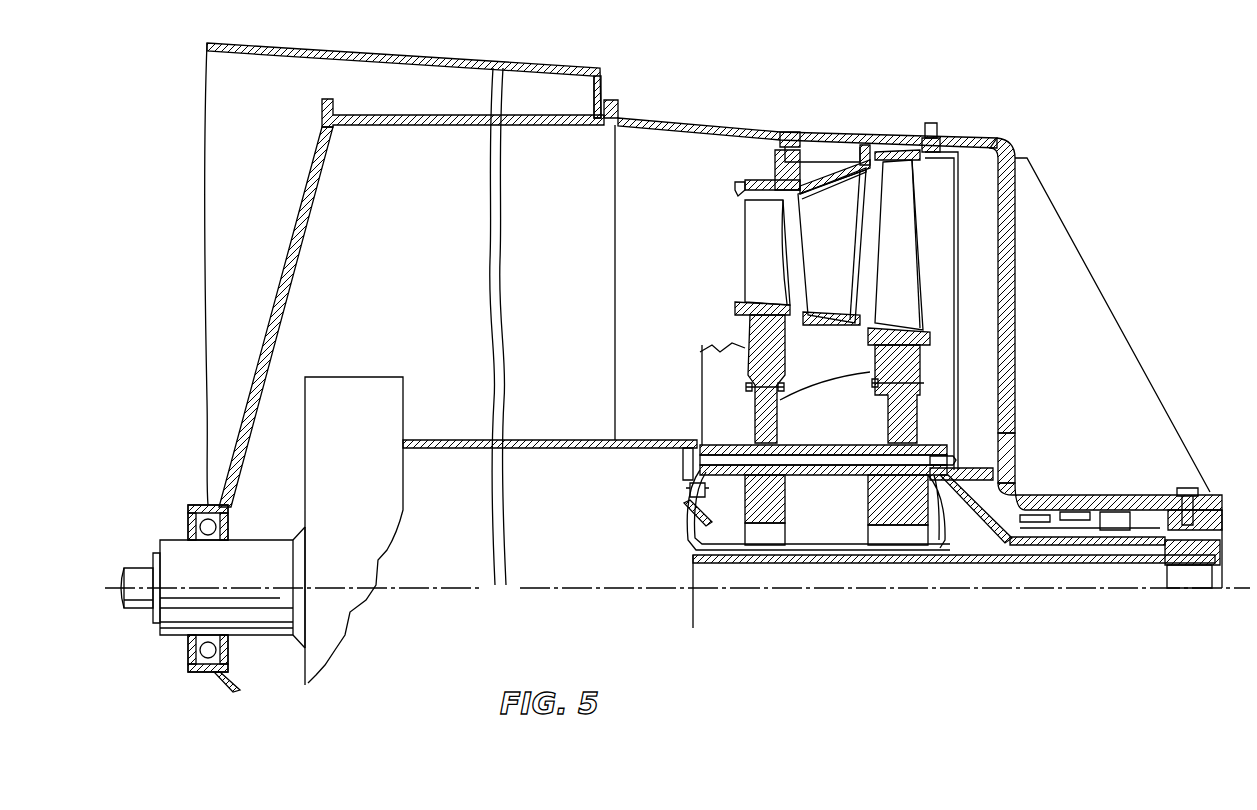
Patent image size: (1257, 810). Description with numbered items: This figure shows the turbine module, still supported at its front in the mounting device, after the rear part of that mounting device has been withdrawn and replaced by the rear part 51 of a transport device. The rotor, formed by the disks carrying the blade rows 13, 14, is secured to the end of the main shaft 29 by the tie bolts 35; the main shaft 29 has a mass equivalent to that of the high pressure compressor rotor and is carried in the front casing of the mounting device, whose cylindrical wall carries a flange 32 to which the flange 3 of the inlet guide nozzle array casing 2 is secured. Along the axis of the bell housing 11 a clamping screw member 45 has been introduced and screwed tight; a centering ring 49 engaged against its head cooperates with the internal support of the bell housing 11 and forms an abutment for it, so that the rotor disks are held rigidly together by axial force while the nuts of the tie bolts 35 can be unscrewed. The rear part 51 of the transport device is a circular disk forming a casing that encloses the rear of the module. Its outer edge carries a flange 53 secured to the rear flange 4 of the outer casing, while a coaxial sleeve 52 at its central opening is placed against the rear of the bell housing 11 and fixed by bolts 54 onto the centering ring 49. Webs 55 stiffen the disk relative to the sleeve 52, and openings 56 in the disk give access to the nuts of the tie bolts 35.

The inlet guide nozzle array casing 2 is at (726, 130).
The flange 3 is at (620, 106).
The rear flange 4 is at (920, 128).
The bell housing 11 is at (970, 476).
The blade row 13 is at (752, 246).
The blade row 14 is at (911, 284).
The main shaft 29 is at (661, 440).
The flange 32 is at (611, 100).
The tie bolts 35 is at (812, 458).
The clamping screw member 45 is at (957, 578).
The centering ring 49 is at (1222, 516).
The rear part of transport device 51 is at (1017, 339).
The sleeve 52 is at (1110, 484).
The flange 53 is at (940, 131).
The bolts 54 is at (1186, 488).
The webs 55 is at (1128, 353).
The openings 56 is at (1017, 451).